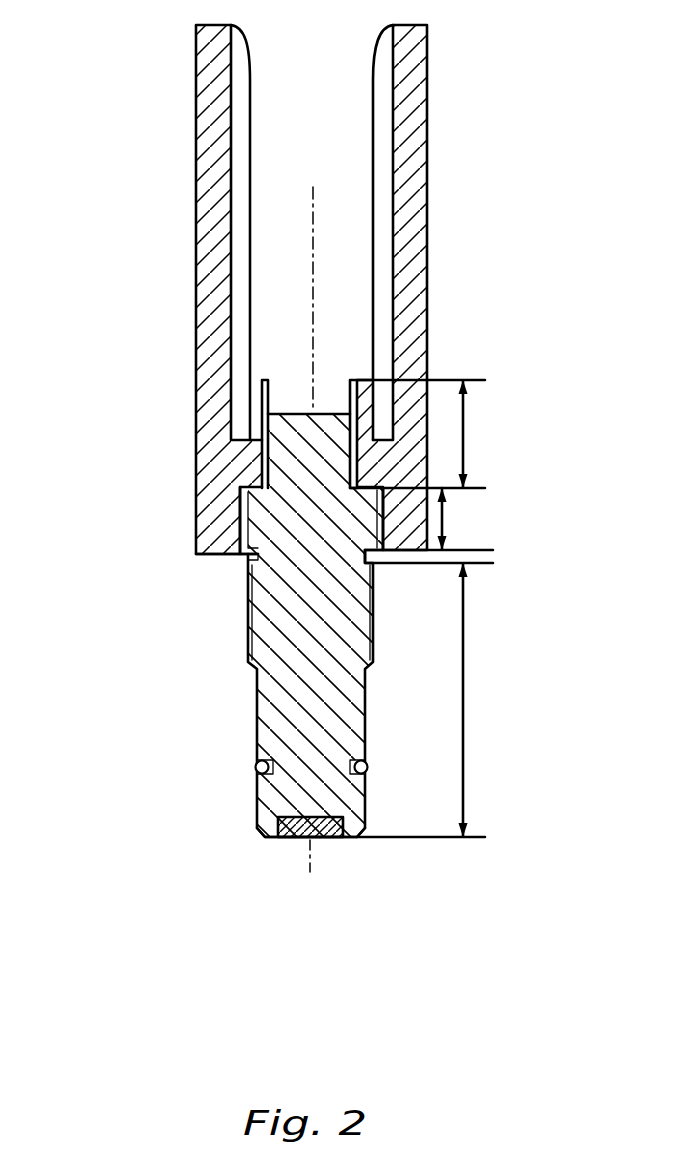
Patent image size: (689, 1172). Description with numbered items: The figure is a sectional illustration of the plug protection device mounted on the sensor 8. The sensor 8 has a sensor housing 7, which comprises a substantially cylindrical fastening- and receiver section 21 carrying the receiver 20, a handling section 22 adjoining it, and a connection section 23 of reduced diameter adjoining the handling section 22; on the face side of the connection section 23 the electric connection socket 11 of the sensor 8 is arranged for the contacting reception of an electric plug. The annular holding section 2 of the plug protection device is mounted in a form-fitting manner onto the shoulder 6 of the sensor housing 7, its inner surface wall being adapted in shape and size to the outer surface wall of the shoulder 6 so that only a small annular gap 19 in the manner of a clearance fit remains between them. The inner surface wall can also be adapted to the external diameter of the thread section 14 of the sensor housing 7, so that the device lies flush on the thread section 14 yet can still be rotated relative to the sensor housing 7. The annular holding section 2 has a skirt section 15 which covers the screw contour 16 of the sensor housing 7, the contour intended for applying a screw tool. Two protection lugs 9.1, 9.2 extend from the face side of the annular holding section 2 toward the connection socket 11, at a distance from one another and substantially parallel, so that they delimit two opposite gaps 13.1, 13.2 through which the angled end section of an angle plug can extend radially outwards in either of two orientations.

The protection lug 9.1 is at (207, 190).
The protection lug 9.2 is at (410, 195).
The gap 13.1 is at (360, 89).
The gap 13.2 is at (350, 131).
The electric connection socket 11 is at (323, 398).
The annular gap 19 is at (362, 443).
The annular holding section 2 is at (245, 462).
The thread section 14 is at (243, 480).
The shoulder 6 is at (253, 507).
The skirt section 15 is at (215, 555).
The sensor housing 7 is at (334, 673).
The sensor 8 is at (238, 848).
The screw contour 16 is at (367, 517).
The receiver 20 is at (323, 838).
The fastening- and receiver section 21 is at (465, 702).
The handling section 22 is at (442, 522).
The connection section 23 is at (463, 442).